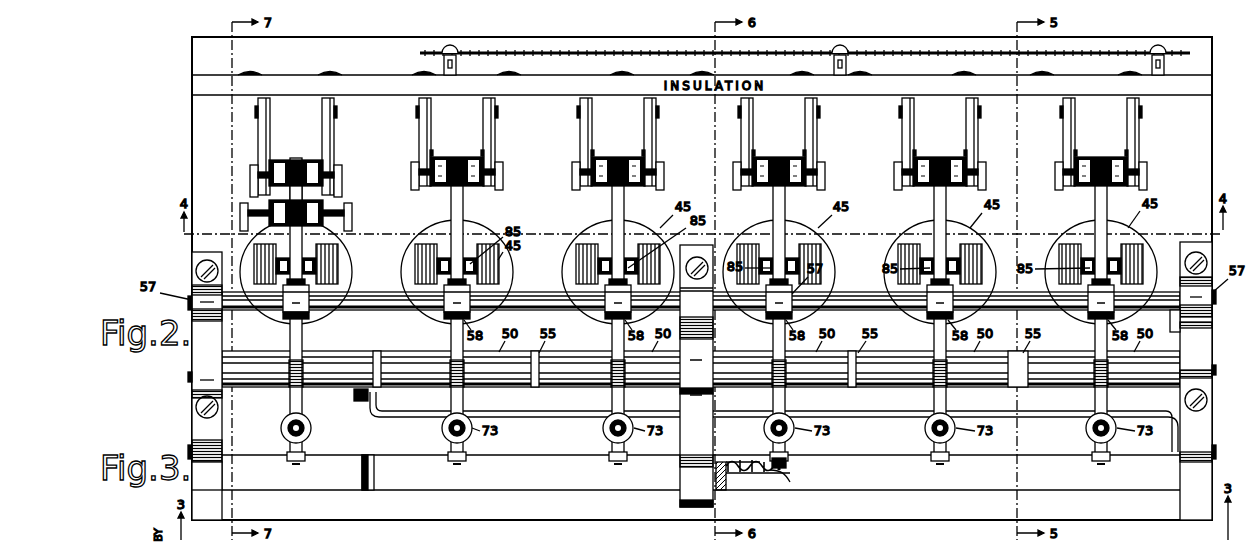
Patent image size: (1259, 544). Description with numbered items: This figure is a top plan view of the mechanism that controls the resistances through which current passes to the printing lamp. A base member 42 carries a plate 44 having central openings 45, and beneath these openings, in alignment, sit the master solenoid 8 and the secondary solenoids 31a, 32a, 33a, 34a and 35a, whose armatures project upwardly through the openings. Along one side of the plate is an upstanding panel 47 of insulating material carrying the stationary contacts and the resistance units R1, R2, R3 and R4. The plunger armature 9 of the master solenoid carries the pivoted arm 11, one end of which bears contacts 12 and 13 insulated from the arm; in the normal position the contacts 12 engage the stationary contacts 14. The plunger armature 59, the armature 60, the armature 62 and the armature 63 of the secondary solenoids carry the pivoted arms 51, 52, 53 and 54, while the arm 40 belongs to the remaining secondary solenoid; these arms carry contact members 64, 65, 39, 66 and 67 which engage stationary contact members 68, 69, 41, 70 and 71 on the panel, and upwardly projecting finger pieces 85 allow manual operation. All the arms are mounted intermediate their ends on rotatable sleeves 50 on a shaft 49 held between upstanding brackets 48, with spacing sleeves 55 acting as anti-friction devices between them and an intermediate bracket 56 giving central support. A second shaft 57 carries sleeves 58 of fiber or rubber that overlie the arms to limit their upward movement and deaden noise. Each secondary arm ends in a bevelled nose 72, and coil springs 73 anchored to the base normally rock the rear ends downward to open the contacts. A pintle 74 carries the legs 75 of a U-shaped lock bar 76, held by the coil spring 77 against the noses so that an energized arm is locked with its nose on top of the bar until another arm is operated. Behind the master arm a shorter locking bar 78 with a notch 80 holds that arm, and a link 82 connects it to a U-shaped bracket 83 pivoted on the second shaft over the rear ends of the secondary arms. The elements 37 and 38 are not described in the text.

The master solenoid 8 is at (322, 252).
The plunger armature 9 is at (284, 268).
The arm 11 is at (288, 340).
The contacts 12 is at (322, 176).
The contacts 13 is at (343, 188).
The stationary contacts 14 is at (330, 168).
The bracket 37 is at (242, 212).
The armature 38 is at (797, 268).
The contact member 39 is at (808, 168).
The pivoted arm 40 is at (773, 340).
The stationary contact member 41 is at (739, 180).
The base member 42 is at (1155, 505).
The plate 44 is at (492, 228).
The central openings 45 is at (350, 262).
The upstanding panel 47 is at (393, 82).
The upstanding brackets 48 is at (192, 352).
The shaft 49 is at (1212, 336).
The rotatable sleeves 50 is at (332, 352).
The pivoted arm 51 is at (450, 340).
The pivoted arm 52 is at (612, 338).
The pivoted arm 53 is at (934, 340).
The pivoted arm 54 is at (1095, 340).
The spacing sleeves 55 is at (379, 353).
The intermediate bracket 56 is at (700, 332).
The second shaft 57 is at (522, 296).
The sleeves 58 is at (302, 320).
The plunger armature 59 is at (437, 252).
The armature 60 is at (612, 246).
The armature 62 is at (960, 268).
The armature 63 is at (1122, 268).
The contact member 64 is at (486, 168).
The contact member 65 is at (647, 168).
The contact member 66 is at (969, 168).
The contact member 67 is at (1130, 168).
The stationary contact member 68 is at (416, 180).
The stationary contact member 69 is at (578, 180).
The stationary contact member 70 is at (900, 180).
The stationary contact member 71 is at (1062, 180).
The nose 72 is at (800, 462).
The coil springs 73 is at (312, 428).
The pintle 74 is at (760, 478).
The legs 75 is at (714, 478).
The lock bar 76 is at (885, 478).
The coil spring 77 is at (745, 478).
The locking bar 78 is at (340, 478).
The notch 80 is at (310, 456).
The link 82 is at (353, 398).
The U-shaped bracket 83 is at (512, 420).
The finger pieces 85 is at (302, 270).
The solenoid 31a is at (446, 250).
The solenoid 32a is at (630, 250).
The solenoid 33a is at (770, 252).
The solenoid 34a is at (912, 250).
The solenoid 35a is at (1073, 250).
The resistance unit R1 is at (567, 51).
The resistance unit R2 is at (707, 51).
The resistance unit R3 is at (912, 51).
The resistance unit R4 is at (1117, 51).